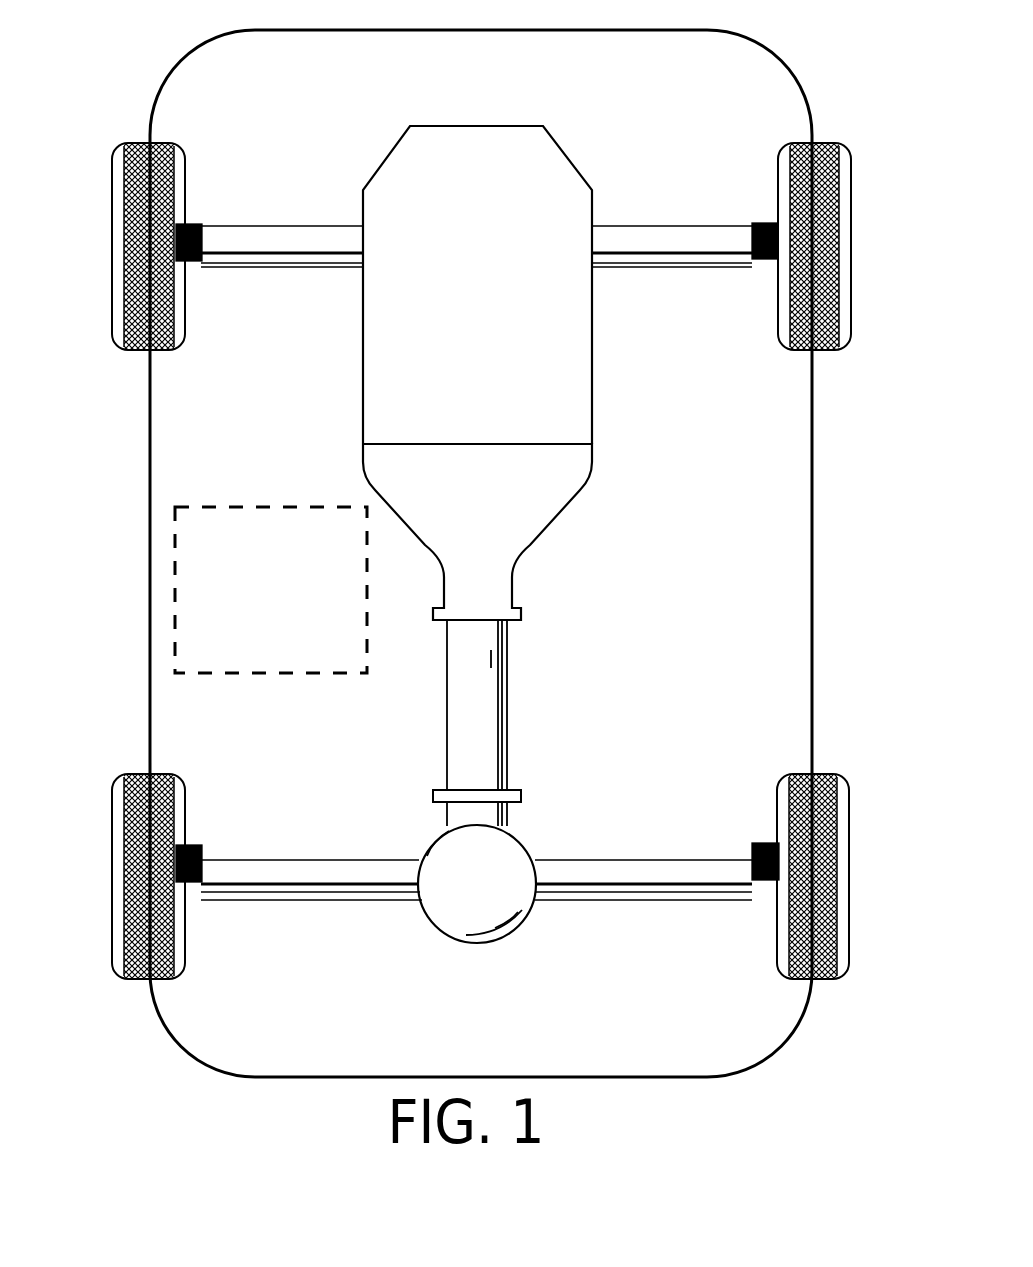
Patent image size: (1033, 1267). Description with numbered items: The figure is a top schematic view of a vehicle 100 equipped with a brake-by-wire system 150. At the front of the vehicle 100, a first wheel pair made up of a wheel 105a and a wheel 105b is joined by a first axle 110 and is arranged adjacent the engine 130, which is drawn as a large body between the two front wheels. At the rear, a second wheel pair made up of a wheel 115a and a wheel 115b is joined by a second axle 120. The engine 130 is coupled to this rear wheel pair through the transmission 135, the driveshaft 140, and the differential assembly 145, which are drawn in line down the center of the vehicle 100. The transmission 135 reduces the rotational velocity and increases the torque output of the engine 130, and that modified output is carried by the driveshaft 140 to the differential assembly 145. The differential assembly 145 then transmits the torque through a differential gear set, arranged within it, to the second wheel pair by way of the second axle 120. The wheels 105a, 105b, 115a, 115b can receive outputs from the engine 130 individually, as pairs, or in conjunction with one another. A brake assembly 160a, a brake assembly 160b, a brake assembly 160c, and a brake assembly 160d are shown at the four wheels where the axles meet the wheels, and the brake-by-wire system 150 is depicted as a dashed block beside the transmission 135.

The vehicle 100 is at (159, 84).
The wheel 105a is at (118, 195).
The wheel 105b is at (848, 190).
The first axle 110 is at (273, 226).
The wheel 115a is at (118, 820).
The wheel 115b is at (848, 818).
The second axle 120 is at (275, 860).
The engine 130 is at (462, 272).
The transmission 135 is at (462, 486).
The driveshaft 140 is at (446, 718).
The differential assembly 145 is at (419, 852).
The brake-by-wire system 150 is at (253, 604).
The brake assembly 160a is at (203, 258).
The brake assembly 160b is at (752, 258).
The brake assembly 160c is at (203, 880).
The brake assembly 160d is at (752, 878).